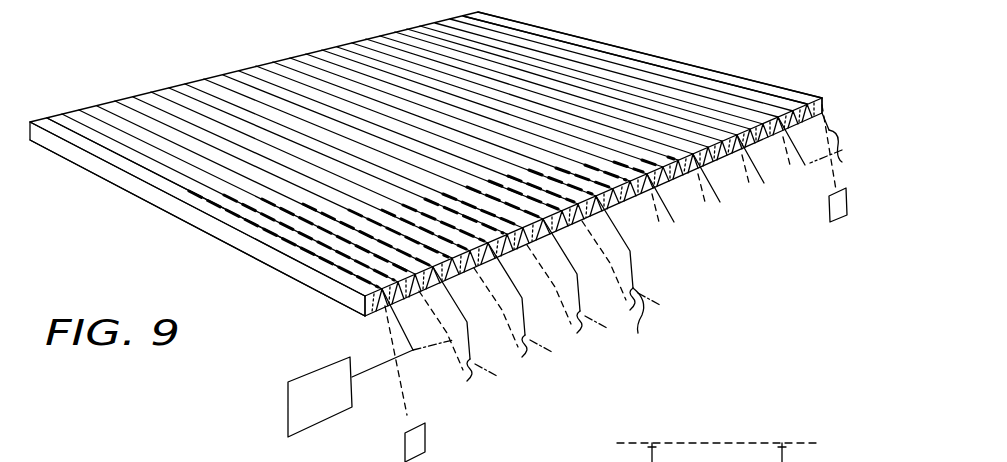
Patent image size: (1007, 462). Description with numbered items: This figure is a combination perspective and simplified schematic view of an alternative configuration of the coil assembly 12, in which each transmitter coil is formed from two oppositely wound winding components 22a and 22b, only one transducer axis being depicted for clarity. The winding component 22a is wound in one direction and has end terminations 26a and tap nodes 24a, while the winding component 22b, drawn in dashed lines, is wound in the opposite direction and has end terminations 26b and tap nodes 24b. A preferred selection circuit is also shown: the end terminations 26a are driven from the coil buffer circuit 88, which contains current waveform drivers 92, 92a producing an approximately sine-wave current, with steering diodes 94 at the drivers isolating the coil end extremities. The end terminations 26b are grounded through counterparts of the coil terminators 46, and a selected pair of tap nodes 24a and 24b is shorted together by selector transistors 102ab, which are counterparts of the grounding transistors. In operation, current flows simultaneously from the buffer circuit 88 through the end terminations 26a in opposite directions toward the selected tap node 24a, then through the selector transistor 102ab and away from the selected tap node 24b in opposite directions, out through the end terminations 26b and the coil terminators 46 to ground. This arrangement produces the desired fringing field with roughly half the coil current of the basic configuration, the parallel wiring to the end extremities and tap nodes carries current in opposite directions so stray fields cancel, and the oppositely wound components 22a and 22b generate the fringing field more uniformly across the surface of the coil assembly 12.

The coil assembly 12 is at (207, 234).
The winding component 22a is at (692, 36).
The winding component 22b is at (277, 258).
The tap nodes 24a is at (509, 236).
The tap nodes 24b is at (610, 260).
The end terminations 26a is at (352, 277).
The end terminations 26b is at (360, 311).
The coil terminators 46 is at (425, 449).
The coil buffer circuit 88 is at (300, 378).
The current waveform drivers 92 is at (799, 452).
The current waveform driver 92a is at (717, 452).
The steering diodes 94 is at (402, 332).
The selector transistors 102ab is at (527, 357).